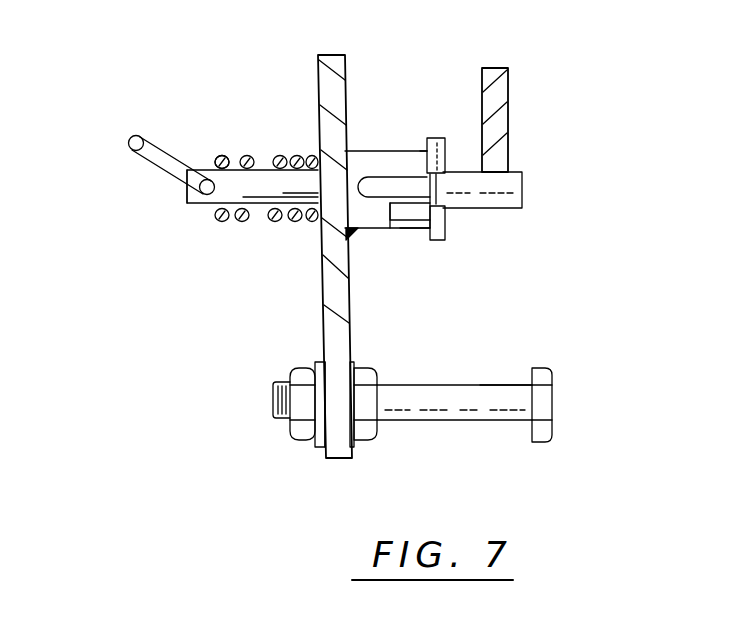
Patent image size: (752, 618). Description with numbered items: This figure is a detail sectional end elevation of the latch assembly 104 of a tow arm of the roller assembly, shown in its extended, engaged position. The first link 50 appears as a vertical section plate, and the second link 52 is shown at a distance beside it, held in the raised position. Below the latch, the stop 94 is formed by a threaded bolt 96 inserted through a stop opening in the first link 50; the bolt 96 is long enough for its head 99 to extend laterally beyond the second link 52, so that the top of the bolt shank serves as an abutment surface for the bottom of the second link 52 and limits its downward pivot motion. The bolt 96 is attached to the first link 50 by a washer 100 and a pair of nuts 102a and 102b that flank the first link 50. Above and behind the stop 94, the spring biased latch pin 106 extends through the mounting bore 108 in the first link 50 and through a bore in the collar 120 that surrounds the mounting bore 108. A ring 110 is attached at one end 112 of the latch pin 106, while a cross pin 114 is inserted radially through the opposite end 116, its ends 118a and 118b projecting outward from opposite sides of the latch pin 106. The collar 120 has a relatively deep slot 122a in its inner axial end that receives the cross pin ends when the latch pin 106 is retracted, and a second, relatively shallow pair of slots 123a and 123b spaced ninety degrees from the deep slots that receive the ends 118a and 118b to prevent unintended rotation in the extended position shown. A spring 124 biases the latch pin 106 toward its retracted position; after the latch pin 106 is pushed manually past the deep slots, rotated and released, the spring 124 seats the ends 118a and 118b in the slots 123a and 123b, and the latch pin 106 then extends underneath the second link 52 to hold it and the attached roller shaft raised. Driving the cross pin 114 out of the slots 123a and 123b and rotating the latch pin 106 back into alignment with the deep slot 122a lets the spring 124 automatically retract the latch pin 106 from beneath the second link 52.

The first link 50 is at (318, 76).
The second link 52 is at (508, 85).
The stop 94 is at (439, 430).
The threaded bolt 96 is at (500, 388).
The head 99 is at (552, 408).
The washer 100 is at (315, 362).
The nut 102a is at (303, 440).
The nut 102b is at (366, 440).
The latch assembly 104 is at (262, 230).
The latch pin 106 is at (265, 170).
The mounting bore 108 is at (323, 226).
The ring 110 is at (135, 152).
The end 112 is at (187, 203).
The cross pin 114 is at (440, 210).
The opposite end 116 is at (465, 214).
The end of cross pin 118a is at (437, 138).
The end of cross pin 118b is at (442, 240).
The collar 120 is at (375, 151).
The slot 122a is at (388, 230).
The slot 123a is at (423, 149).
The slot 123b is at (420, 234).
The spring 124 is at (220, 157).